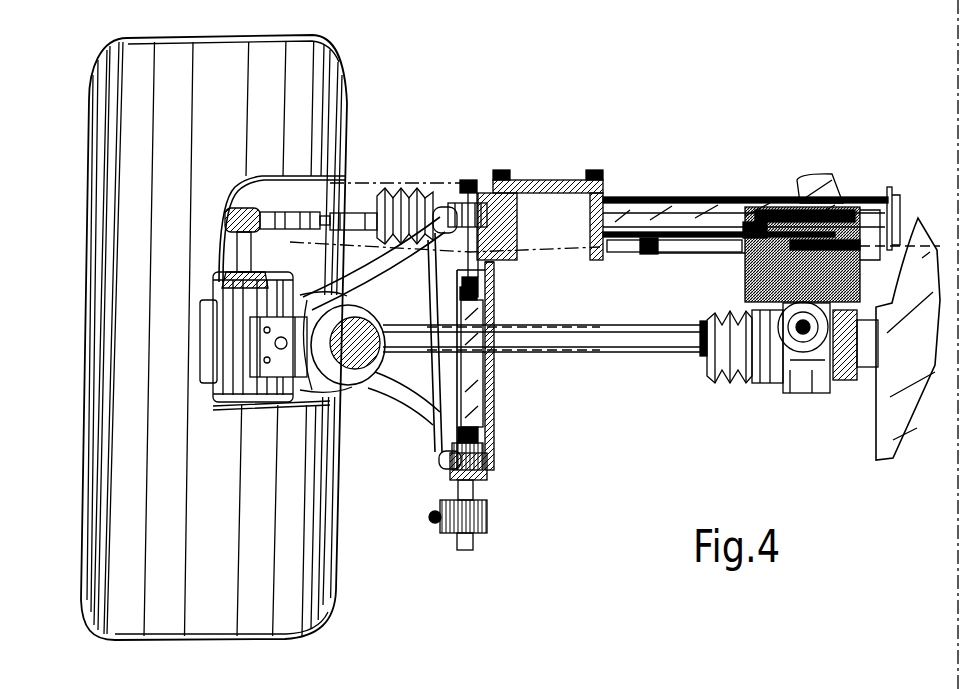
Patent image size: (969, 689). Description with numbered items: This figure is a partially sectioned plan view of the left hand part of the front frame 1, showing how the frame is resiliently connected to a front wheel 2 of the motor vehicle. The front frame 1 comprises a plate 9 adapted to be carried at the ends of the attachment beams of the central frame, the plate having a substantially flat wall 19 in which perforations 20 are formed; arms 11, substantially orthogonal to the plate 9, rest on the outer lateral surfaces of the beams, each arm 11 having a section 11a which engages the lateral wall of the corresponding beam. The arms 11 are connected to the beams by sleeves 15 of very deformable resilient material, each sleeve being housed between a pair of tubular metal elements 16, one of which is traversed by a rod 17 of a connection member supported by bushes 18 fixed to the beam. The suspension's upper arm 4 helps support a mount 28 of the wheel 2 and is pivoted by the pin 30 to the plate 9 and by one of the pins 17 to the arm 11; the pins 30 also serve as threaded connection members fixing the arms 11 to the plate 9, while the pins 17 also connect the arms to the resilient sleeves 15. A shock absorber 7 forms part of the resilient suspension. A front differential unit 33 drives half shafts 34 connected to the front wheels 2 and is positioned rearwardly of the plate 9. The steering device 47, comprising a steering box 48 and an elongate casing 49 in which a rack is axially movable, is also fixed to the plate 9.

The front frame 1 is at (637, 278).
The front wheel 2 is at (300, 85).
The upper arm 4 is at (378, 418).
The shock absorber 7 is at (368, 417).
The plate 9 is at (687, 258).
The arm 11 is at (497, 413).
The arm section 11a is at (478, 367).
The sleeve 15 is at (455, 540).
The tubular metal element 16 is at (482, 520).
The rod 17 is at (450, 485).
The bush 18 is at (480, 522).
The flat wall 19 is at (603, 260).
The perforation 20 is at (918, 218).
The mount 28 is at (240, 277).
The pin 30 is at (490, 262).
The front differential unit 33 is at (877, 420).
The half shaft 34 is at (663, 340).
The steering device 47 is at (812, 353).
The steering box 48 is at (748, 380).
The casing 49 is at (670, 203).